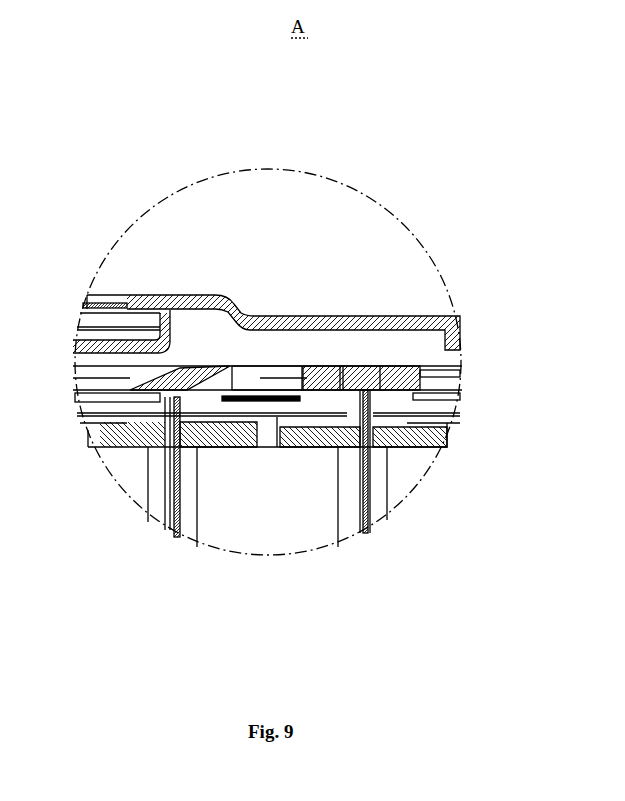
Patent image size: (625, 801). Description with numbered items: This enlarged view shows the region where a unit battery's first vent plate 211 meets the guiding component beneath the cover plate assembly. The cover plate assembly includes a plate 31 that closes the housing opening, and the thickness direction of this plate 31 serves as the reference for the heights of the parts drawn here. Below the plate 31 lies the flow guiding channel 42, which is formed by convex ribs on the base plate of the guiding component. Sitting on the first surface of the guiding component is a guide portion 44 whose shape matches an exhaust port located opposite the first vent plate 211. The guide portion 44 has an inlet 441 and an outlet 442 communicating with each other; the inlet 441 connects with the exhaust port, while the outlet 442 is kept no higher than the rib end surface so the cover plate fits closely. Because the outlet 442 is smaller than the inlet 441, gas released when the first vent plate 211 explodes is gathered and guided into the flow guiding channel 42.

The flow guiding channel 42 is at (297, 345).
The plate 31 is at (172, 297).
The guide portion 44 is at (323, 368).
The outlet 442 is at (266, 360).
The inlet 441 is at (216, 398).
The first vent plate 211 is at (367, 452).